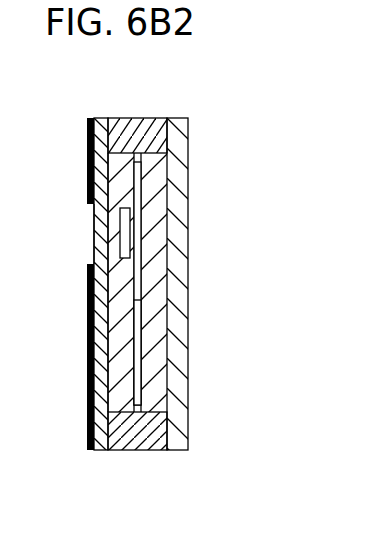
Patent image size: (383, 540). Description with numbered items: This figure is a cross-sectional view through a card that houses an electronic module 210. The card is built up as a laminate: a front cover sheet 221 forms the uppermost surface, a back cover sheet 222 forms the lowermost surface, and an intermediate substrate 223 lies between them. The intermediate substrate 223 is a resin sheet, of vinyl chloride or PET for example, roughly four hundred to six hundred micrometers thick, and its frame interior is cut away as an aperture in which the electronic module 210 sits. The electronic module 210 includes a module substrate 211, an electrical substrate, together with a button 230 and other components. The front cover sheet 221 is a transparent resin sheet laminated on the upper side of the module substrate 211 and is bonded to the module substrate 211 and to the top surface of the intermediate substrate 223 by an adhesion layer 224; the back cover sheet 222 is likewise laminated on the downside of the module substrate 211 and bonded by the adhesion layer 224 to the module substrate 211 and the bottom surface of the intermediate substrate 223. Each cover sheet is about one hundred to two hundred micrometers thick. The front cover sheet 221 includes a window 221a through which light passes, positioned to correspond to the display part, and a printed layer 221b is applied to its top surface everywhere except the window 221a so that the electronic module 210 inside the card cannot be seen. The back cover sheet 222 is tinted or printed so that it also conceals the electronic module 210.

The electronic module 210 is at (152, 334).
The module substrate 211 is at (143, 377).
The front cover sheet 221 is at (98, 452).
The window 221a is at (76, 206).
The printed layer 221b is at (86, 118).
The back cover sheet 222 is at (172, 452).
The intermediate substrate 223 is at (135, 452).
The adhesion layer 224 is at (160, 188).
The button 230 is at (112, 347).